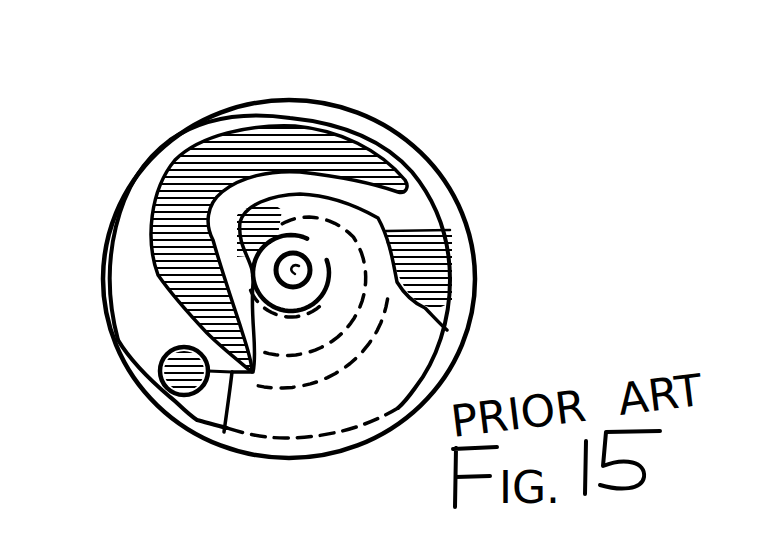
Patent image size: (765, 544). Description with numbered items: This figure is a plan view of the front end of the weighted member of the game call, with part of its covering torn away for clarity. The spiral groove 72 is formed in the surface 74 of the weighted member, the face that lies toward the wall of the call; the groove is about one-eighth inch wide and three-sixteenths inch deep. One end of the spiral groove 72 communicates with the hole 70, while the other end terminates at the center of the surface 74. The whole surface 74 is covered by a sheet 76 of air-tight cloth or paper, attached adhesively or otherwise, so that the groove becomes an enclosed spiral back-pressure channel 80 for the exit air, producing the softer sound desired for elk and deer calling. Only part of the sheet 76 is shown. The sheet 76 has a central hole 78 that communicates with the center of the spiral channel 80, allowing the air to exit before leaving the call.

The hole 70 is at (183, 404).
The spiral groove 72 is at (427, 183).
The surface of the weighted member 74 is at (116, 210).
The sheet 76 is at (443, 403).
The hole of the sheet 78 is at (314, 259).
The spiral back-pressure channel 80 is at (390, 180).